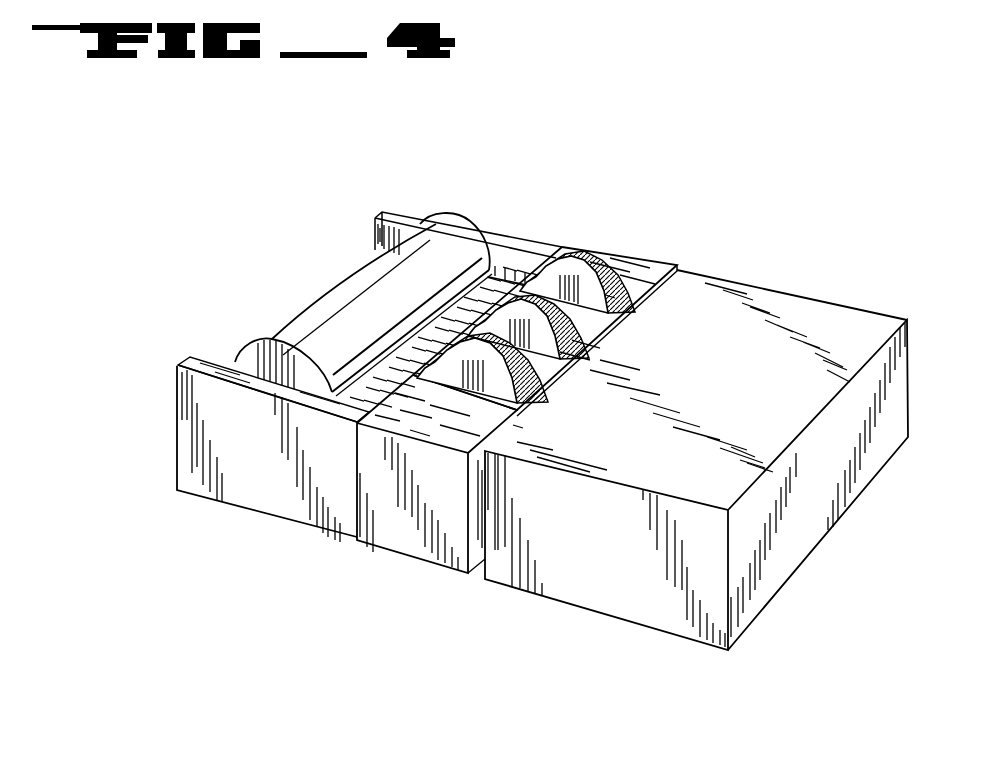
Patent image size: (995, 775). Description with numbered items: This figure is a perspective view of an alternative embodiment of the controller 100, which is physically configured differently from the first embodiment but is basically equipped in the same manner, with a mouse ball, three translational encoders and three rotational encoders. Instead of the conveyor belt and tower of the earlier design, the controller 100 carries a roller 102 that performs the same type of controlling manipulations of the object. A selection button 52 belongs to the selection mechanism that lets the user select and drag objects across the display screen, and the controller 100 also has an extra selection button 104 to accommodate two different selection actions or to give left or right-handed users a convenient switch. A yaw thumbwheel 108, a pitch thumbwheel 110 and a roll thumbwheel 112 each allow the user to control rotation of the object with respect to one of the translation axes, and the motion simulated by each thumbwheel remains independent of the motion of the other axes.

The controller 100 is at (838, 328).
The roller 102 is at (447, 238).
The extra selection button 104 is at (405, 533).
The selection button 52 is at (645, 262).
The yaw thumbwheel 108 is at (540, 383).
The pitch thumbwheel 110 is at (602, 347).
The roll thumbwheel 112 is at (643, 303).